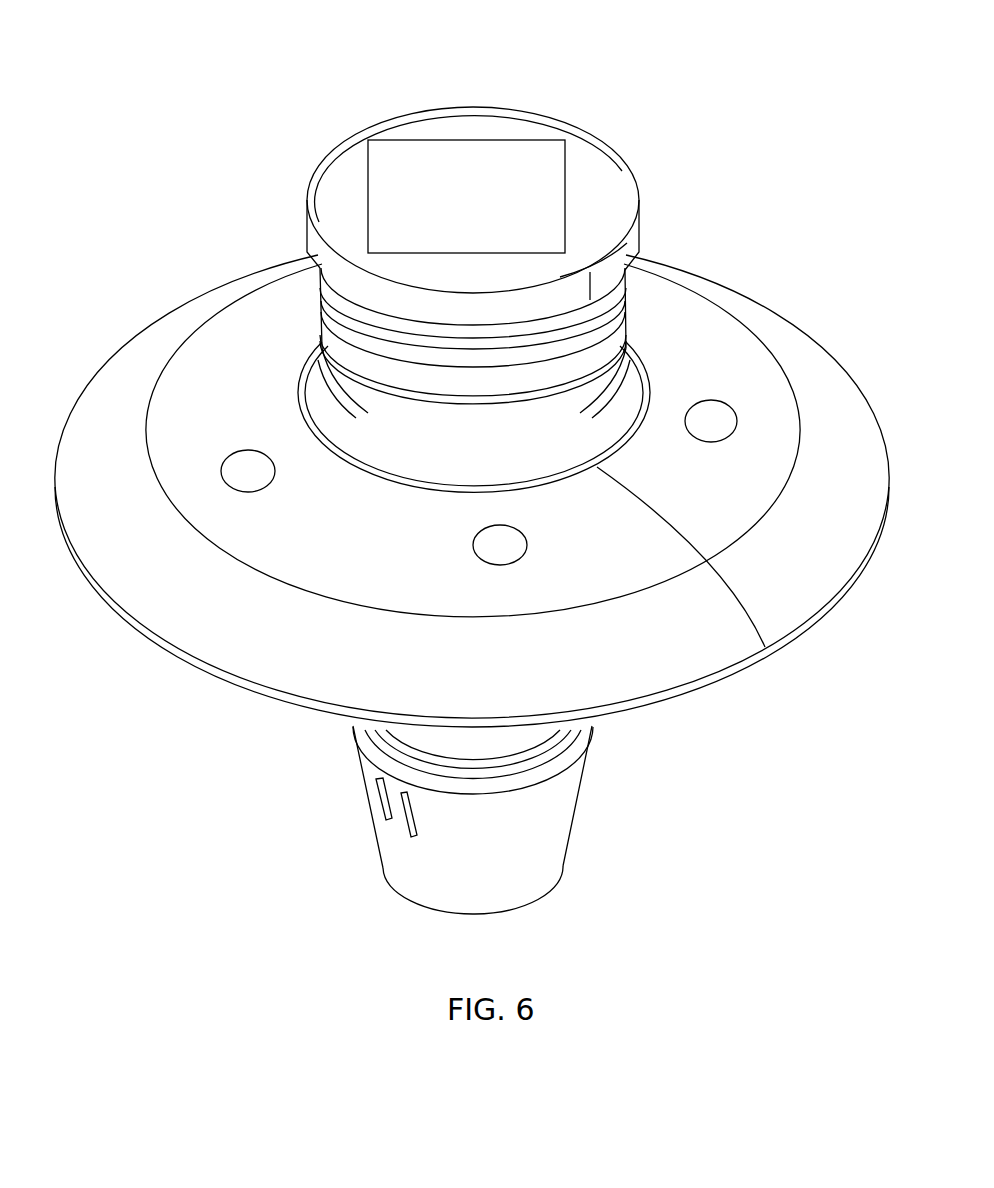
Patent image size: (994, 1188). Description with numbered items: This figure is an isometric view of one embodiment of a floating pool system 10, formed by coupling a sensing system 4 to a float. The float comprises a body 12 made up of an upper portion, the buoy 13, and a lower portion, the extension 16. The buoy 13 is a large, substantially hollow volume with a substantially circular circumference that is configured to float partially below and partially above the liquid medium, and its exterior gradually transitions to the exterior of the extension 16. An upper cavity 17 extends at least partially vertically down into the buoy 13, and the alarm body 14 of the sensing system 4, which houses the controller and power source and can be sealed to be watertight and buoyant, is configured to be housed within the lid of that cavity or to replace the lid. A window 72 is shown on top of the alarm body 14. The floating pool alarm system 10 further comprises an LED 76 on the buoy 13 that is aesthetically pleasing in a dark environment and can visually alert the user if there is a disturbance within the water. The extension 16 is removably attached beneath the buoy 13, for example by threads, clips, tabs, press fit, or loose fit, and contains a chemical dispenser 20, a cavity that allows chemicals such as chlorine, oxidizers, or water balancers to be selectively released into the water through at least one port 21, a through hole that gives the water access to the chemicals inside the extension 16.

The floating pool system 10 is at (473, 78).
The sensing system 4 is at (293, 175).
The window 72 is at (530, 160).
The alarm body 14 is at (622, 260).
The upper cavity 17 is at (357, 432).
The buoy 13 is at (147, 325).
The body 12 is at (180, 652).
The LED 76 is at (711, 421).
The chemical dispenser 20 is at (558, 800).
The extension 16 is at (530, 848).
The port 21 is at (380, 784).